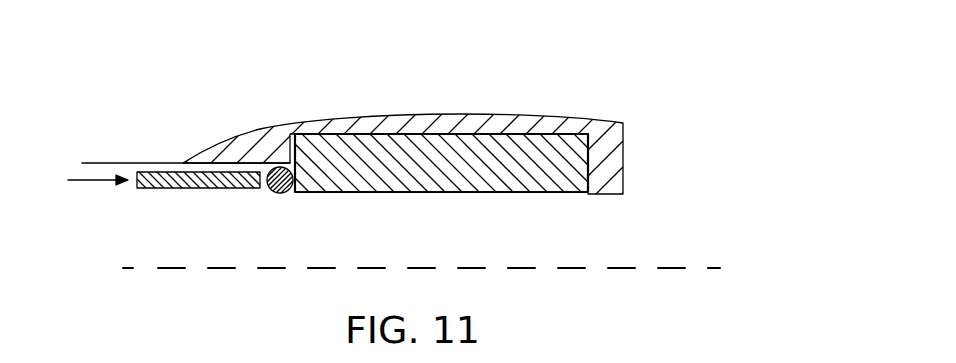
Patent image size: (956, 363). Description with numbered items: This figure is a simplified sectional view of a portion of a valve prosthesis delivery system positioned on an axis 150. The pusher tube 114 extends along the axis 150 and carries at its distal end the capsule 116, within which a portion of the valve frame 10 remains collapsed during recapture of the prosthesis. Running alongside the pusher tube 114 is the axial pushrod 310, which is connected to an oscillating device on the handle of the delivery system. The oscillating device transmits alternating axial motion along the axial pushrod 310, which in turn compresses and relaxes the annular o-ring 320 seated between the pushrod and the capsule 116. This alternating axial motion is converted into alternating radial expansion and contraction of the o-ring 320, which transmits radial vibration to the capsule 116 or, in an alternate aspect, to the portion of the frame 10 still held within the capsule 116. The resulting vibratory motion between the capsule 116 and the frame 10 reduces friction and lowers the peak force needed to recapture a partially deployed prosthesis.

The valve frame 10 is at (540, 170).
The pusher tube 114 is at (137, 162).
The capsule 116 is at (457, 123).
The axis 150 is at (672, 268).
The axial pushrod 310 is at (175, 183).
The annular o-ring 320 is at (282, 190).